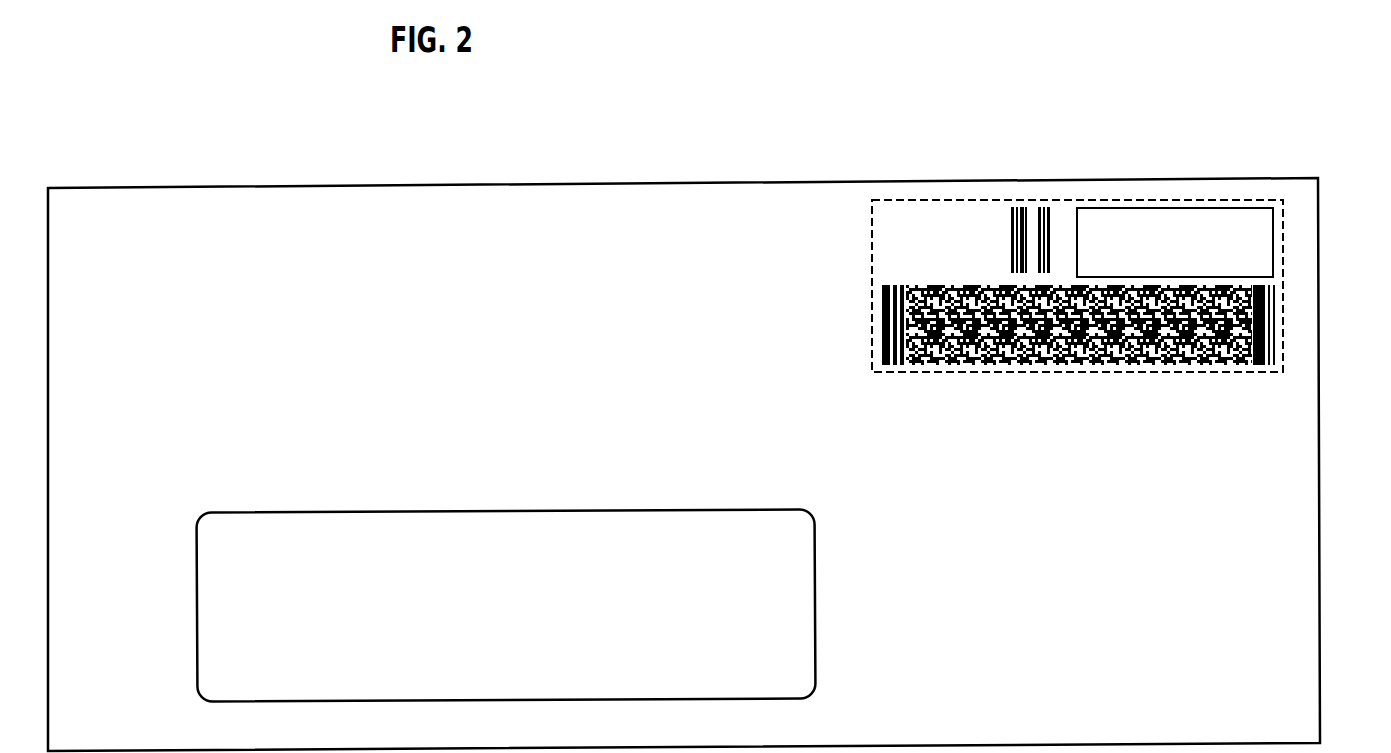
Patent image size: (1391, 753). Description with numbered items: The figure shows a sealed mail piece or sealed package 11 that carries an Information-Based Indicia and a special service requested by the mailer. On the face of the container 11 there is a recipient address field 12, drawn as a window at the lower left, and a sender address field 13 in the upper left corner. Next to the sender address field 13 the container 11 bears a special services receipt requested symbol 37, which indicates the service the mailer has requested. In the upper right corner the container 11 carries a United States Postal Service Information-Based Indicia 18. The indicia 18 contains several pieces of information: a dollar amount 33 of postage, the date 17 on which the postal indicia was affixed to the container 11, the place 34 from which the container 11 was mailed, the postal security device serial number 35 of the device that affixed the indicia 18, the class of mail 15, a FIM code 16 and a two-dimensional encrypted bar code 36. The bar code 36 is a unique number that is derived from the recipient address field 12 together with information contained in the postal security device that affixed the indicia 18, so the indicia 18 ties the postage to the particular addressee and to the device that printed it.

The sealed mail piece or sealed package 11 is at (703, 183).
The recipient address field 12 is at (663, 510).
The sender address field 13 is at (178, 213).
The class of mail 15 is at (908, 217).
The FIM code 16 is at (1022, 217).
The date 17 is at (1077, 237).
The Information-Based Indicia 18 is at (1142, 200).
The dollar amount 33 is at (1233, 220).
The place 34 is at (1252, 252).
The postal security device serial number 35 is at (1255, 265).
The 2D encrypted bar code 36 is at (1275, 328).
The special services receipt requested symbol 37 is at (491, 215).